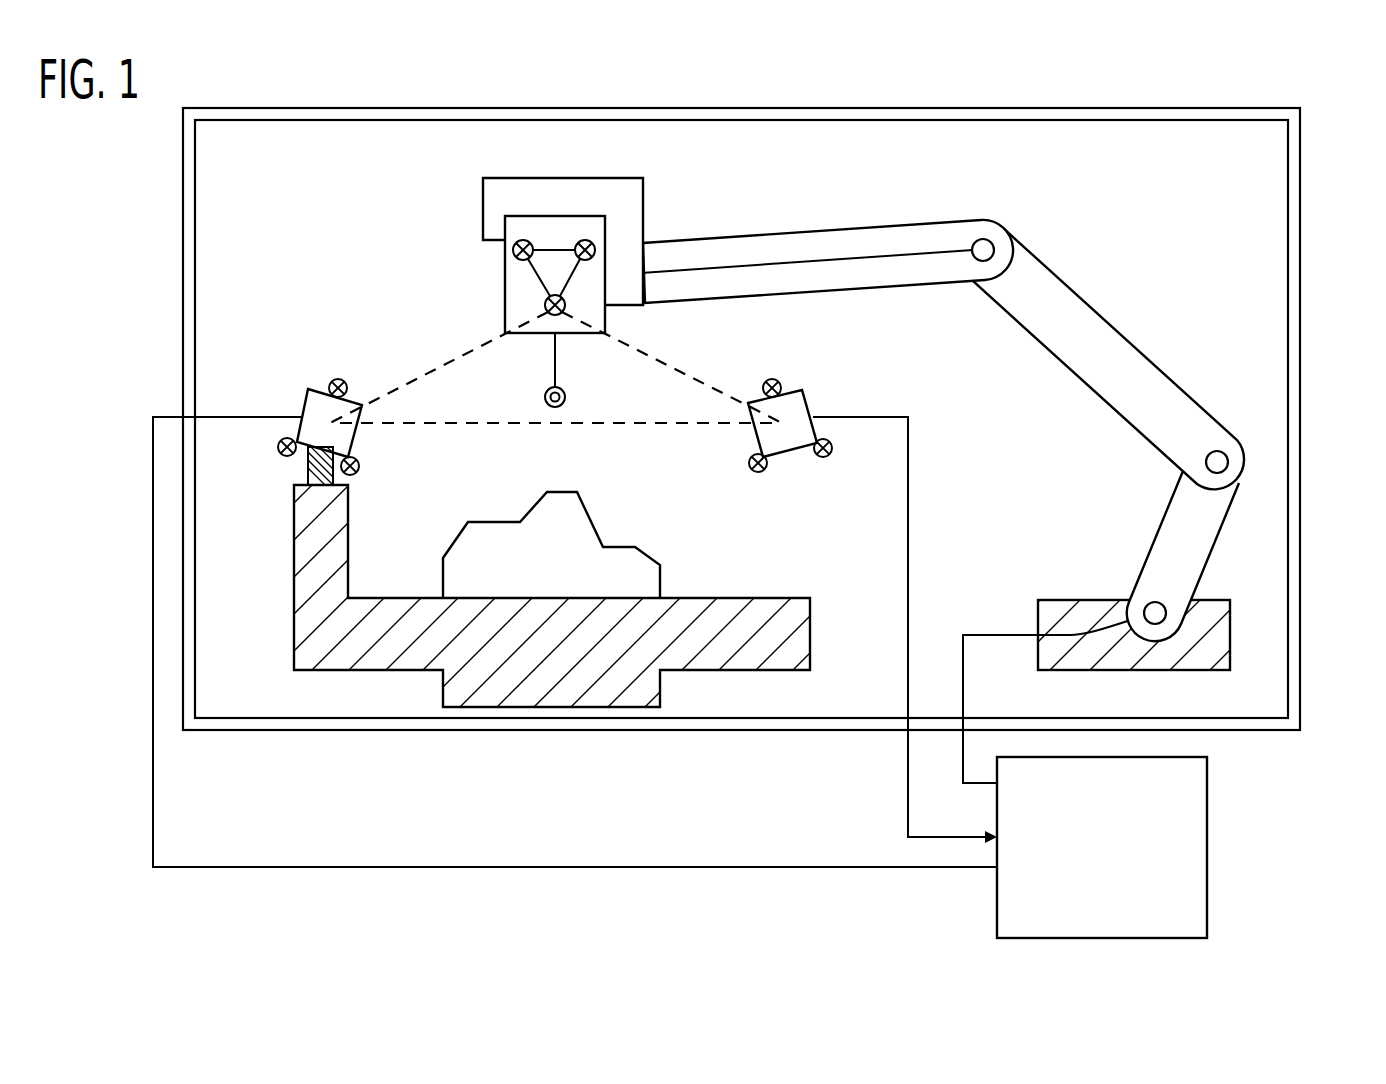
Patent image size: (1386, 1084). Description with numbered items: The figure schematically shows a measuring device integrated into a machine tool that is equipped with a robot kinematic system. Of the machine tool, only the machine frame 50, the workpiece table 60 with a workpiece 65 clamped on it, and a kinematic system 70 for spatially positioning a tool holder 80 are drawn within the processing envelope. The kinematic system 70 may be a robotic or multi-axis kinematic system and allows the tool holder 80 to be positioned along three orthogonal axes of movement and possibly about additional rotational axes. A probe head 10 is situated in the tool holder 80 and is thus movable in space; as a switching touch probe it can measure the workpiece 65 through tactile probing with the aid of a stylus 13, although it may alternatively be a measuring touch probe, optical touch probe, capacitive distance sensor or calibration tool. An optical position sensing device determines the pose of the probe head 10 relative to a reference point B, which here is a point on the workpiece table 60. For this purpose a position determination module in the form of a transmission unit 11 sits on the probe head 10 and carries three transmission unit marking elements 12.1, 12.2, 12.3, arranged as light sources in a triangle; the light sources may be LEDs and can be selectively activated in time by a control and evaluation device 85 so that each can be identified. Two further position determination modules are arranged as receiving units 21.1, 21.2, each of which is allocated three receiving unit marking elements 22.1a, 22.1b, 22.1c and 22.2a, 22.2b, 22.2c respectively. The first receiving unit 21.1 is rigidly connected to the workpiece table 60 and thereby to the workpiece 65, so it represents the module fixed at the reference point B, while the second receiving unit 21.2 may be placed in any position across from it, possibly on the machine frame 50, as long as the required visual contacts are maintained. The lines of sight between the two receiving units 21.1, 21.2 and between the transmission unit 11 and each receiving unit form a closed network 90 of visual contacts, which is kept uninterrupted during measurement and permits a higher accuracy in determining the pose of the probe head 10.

The probe head 10 is at (605, 222).
The transmission unit 11 is at (530, 278).
The transmission unit marking element 12.1 is at (523, 240).
The transmission unit marking element 12.2 is at (585, 240).
The transmission unit marking element 12.3 is at (553, 318).
The stylus 13 is at (557, 365).
The first receiving unit 21.1 is at (312, 405).
The second receiving unit 21.2 is at (800, 407).
The receiving unit marking element 22.1a is at (339, 378).
The receiving unit marking element 22.1b is at (360, 466).
The receiving unit marking element 22.1c is at (280, 453).
The receiving unit marking element 22.2a is at (775, 378).
The receiving unit marking element 22.2b is at (827, 457).
The receiving unit marking element 22.2c is at (758, 473).
The machine frame 50 is at (1300, 222).
The workpiece table 60 is at (305, 628).
The workpiece 65 is at (575, 522).
The kinematic system 70 is at (1082, 300).
The tool holder 80 is at (630, 210).
The control and evaluation device 85 is at (1195, 825).
The network of visual contacts 90 is at (683, 430).
The reference point B is at (318, 487).